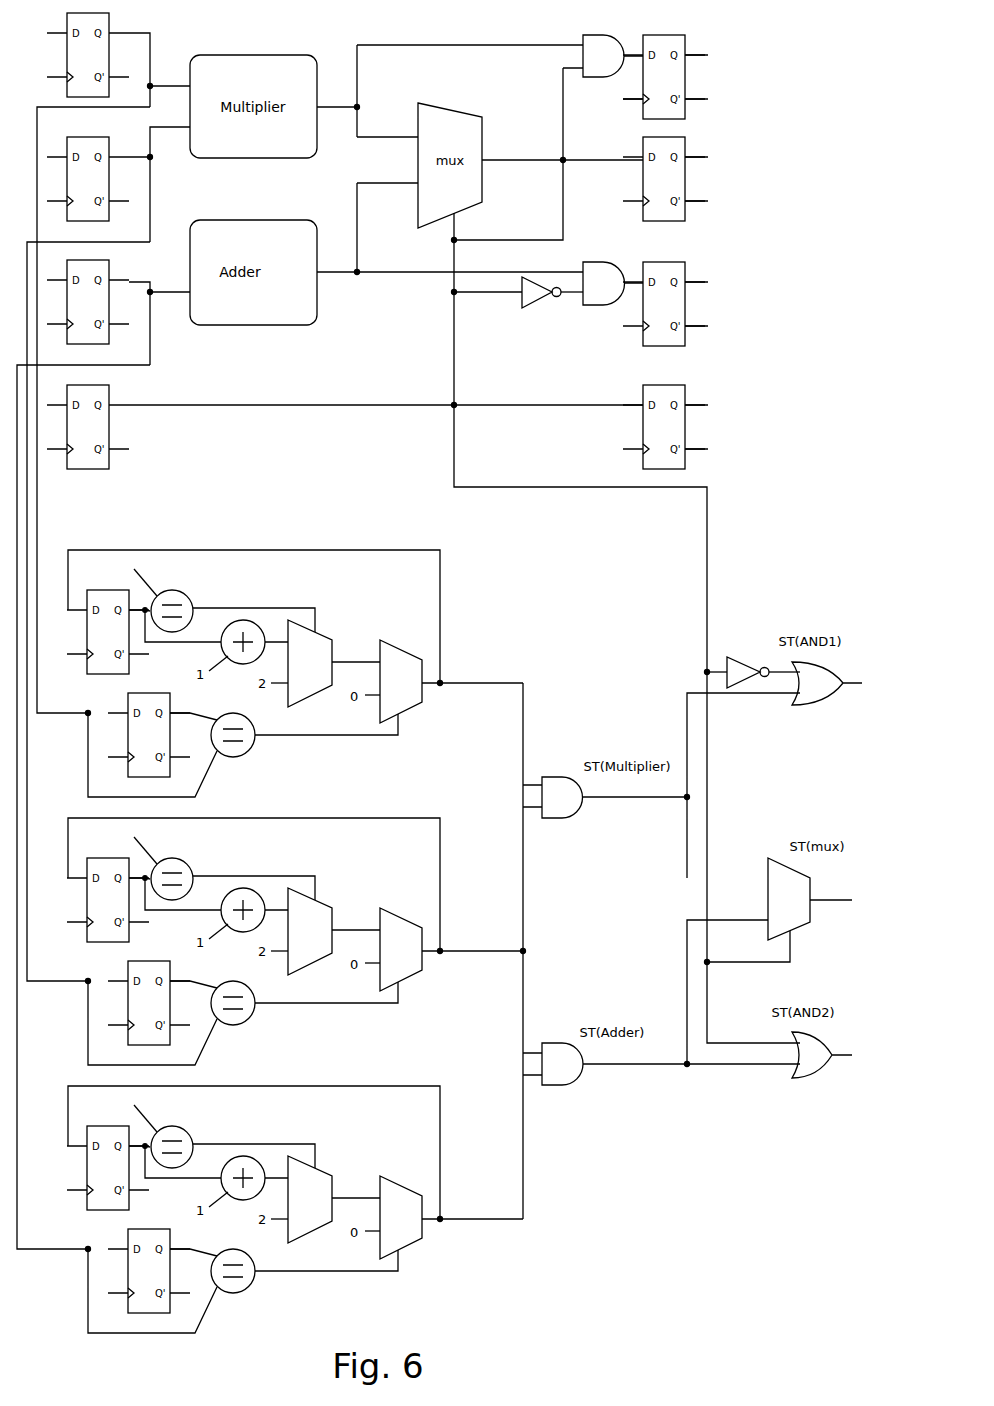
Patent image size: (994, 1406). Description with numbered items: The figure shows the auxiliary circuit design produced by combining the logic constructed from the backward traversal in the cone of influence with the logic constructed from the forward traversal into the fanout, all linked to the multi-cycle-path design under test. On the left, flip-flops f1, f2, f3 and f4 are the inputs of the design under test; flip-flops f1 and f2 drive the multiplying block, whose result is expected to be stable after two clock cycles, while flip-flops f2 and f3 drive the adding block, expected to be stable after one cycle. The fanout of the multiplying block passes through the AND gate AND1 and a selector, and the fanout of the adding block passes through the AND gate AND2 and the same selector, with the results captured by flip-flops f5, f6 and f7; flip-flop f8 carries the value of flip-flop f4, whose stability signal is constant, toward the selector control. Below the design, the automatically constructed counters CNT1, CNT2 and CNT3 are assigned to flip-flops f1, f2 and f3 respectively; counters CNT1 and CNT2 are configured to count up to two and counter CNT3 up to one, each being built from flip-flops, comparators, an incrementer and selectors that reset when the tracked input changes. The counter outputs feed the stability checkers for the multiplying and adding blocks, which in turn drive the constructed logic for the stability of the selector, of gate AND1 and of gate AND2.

The flip-flop f1 is at (118, 60).
The flip-flop f2 is at (118, 184).
The flip-flop f3 is at (118, 312).
The flip-flop f4 is at (345, 427).
The flip-flop f5 is at (665, 77).
The flip-flop f6 is at (665, 179).
The flip-flop f7 is at (665, 304).
The flip-flop f8 is at (665, 427).
The AND gate AND1 is at (613, 45).
The AND gate AND2 is at (613, 273).
The counter circuit CNT1 is at (295, 673).
The counter circuit CNT2 is at (295, 941).
The counter circuit CNT3 is at (295, 1209).